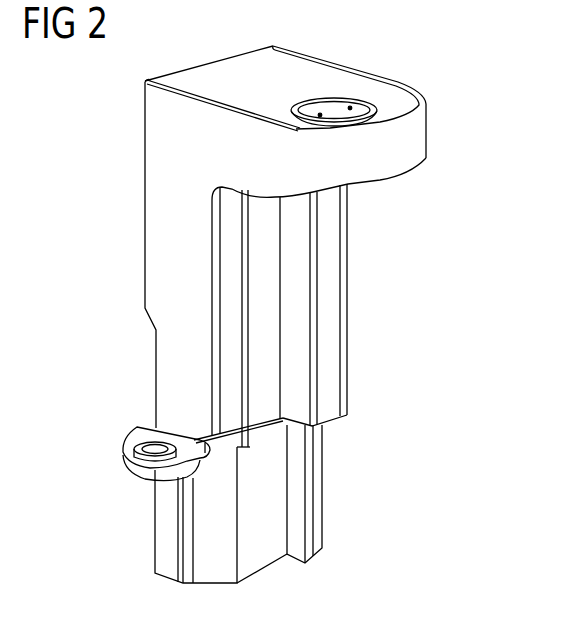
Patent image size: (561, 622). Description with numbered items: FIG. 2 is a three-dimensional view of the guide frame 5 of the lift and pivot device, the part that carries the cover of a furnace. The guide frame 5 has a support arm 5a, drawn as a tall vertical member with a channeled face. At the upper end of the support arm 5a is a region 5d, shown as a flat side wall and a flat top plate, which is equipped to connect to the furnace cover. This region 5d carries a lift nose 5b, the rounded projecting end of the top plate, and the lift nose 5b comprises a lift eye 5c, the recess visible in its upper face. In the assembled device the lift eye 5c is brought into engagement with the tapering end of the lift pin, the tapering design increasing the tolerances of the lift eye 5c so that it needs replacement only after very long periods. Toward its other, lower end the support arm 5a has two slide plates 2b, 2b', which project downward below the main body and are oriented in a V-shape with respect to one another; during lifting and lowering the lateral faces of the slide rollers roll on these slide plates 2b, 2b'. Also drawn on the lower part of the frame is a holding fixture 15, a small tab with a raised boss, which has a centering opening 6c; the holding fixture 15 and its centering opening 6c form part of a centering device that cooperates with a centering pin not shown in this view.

The guide frame 5 is at (444, 317).
The support arm 5a is at (166, 342).
The lift nose 5b is at (393, 112).
The lift eye 5c is at (333, 110).
The region 5d is at (145, 141).
The centering opening 6c is at (150, 448).
The holding fixture 15 is at (150, 431).
The slide plate 2b is at (199, 515).
The slide plate 2b' is at (335, 494).